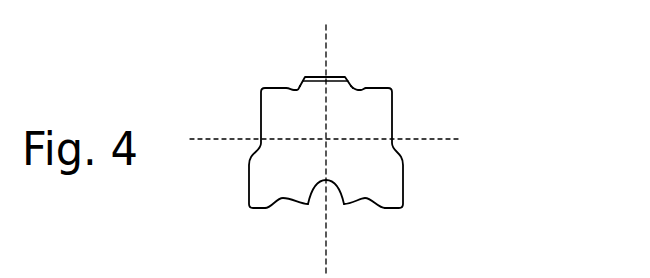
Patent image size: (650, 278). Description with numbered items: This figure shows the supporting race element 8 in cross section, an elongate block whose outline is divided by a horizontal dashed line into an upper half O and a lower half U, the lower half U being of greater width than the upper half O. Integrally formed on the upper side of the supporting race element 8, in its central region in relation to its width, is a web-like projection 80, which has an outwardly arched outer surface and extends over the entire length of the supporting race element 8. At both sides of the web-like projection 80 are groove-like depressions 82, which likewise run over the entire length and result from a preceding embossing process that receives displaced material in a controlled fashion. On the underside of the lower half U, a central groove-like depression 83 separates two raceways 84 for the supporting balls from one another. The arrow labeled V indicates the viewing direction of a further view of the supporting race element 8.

The supporting race element 8 is at (427, 82).
The web-like projection 80 is at (340, 77).
The groove-like depressions 82 is at (290, 86).
The groove-like depression 83 is at (332, 190).
The raceways 84 is at (283, 200).
The upper half O is at (283, 117).
The lower half U is at (272, 173).
The view V is at (517, 139).